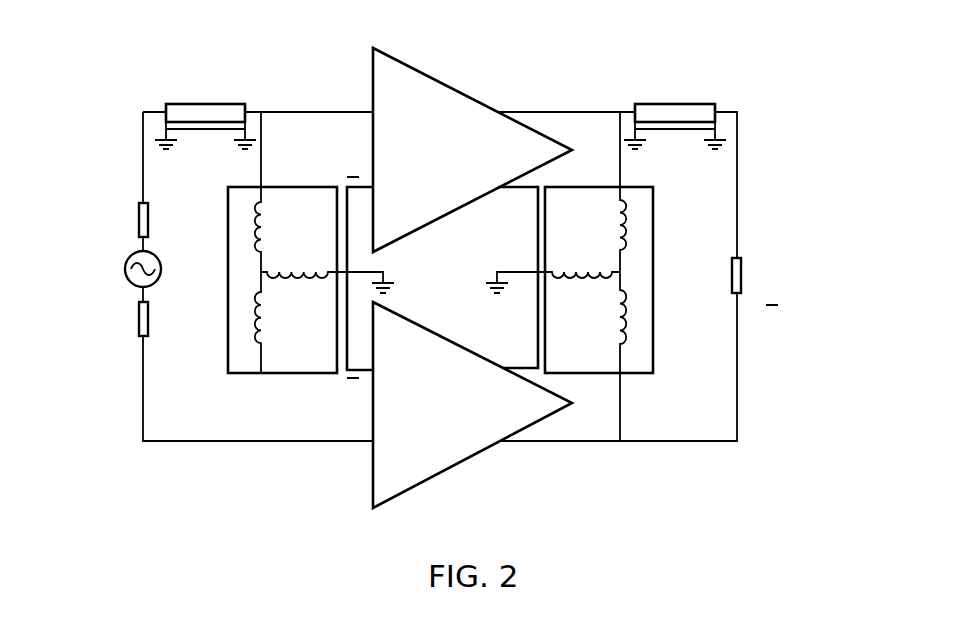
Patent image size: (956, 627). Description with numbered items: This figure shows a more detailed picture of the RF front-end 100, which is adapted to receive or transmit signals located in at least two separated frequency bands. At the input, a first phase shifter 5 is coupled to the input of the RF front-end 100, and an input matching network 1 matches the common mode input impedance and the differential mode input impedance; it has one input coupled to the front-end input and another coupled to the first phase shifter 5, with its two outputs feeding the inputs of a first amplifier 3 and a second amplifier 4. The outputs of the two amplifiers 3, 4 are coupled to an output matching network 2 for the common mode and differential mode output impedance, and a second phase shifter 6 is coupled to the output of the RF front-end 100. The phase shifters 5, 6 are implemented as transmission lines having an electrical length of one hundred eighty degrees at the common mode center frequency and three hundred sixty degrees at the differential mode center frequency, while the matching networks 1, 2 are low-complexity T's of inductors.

The RF front-end 100 is at (440, 293).
The input matching network 1 is at (286, 204).
The output matching network 2 is at (641, 214).
The first amplifier 3 is at (443, 111).
The second amplifier 4 is at (468, 437).
The first phase shifter 5 is at (205, 110).
The second phase shifter 6 is at (676, 111).